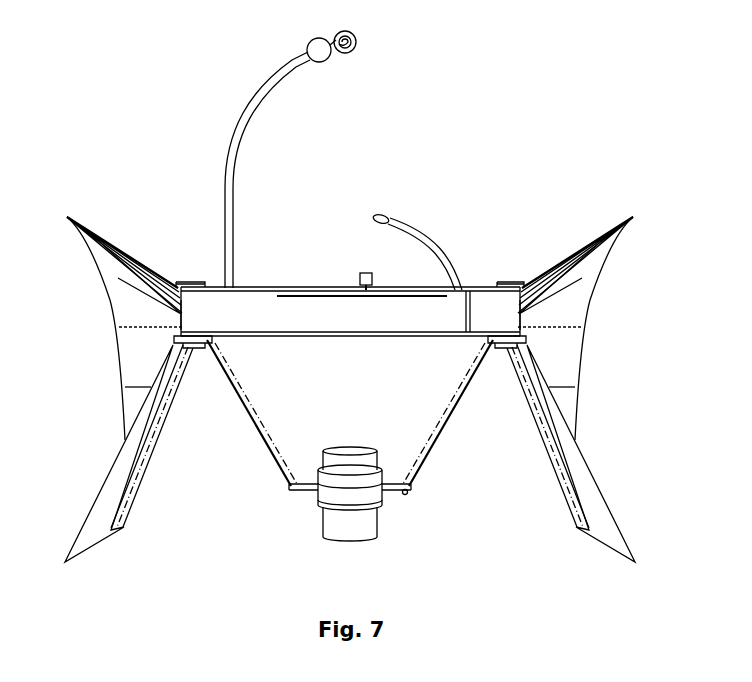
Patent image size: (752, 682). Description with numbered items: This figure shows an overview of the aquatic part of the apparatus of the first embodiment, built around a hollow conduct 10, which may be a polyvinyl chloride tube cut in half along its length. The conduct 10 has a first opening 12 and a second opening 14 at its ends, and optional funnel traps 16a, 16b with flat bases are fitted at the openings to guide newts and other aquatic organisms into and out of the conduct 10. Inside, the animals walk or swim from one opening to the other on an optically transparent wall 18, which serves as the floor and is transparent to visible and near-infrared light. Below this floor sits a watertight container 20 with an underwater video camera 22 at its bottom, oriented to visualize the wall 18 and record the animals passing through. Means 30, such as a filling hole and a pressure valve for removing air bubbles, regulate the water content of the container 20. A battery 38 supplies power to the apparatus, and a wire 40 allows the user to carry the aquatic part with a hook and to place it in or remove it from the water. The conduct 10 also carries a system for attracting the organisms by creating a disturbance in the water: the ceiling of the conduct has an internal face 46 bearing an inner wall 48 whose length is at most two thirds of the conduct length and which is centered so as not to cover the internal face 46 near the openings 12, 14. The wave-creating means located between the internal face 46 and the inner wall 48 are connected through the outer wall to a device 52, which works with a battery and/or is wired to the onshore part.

The hollow conduct 10 is at (262, 307).
The first opening 12 is at (176, 313).
The second opening 14 is at (524, 312).
The funnel trap 16a is at (138, 275).
The funnel trap 16b is at (568, 310).
The optically transparent wall 18 is at (240, 402).
The watertight container 20 is at (418, 413).
The underwater video camera 22 is at (372, 517).
The means for regulating the water content 30 is at (408, 492).
The battery 38 is at (315, 52).
The wire 40 is at (437, 247).
The internal face 46 is at (468, 293).
The inner wall 48 is at (313, 296).
The device 52 is at (365, 273).